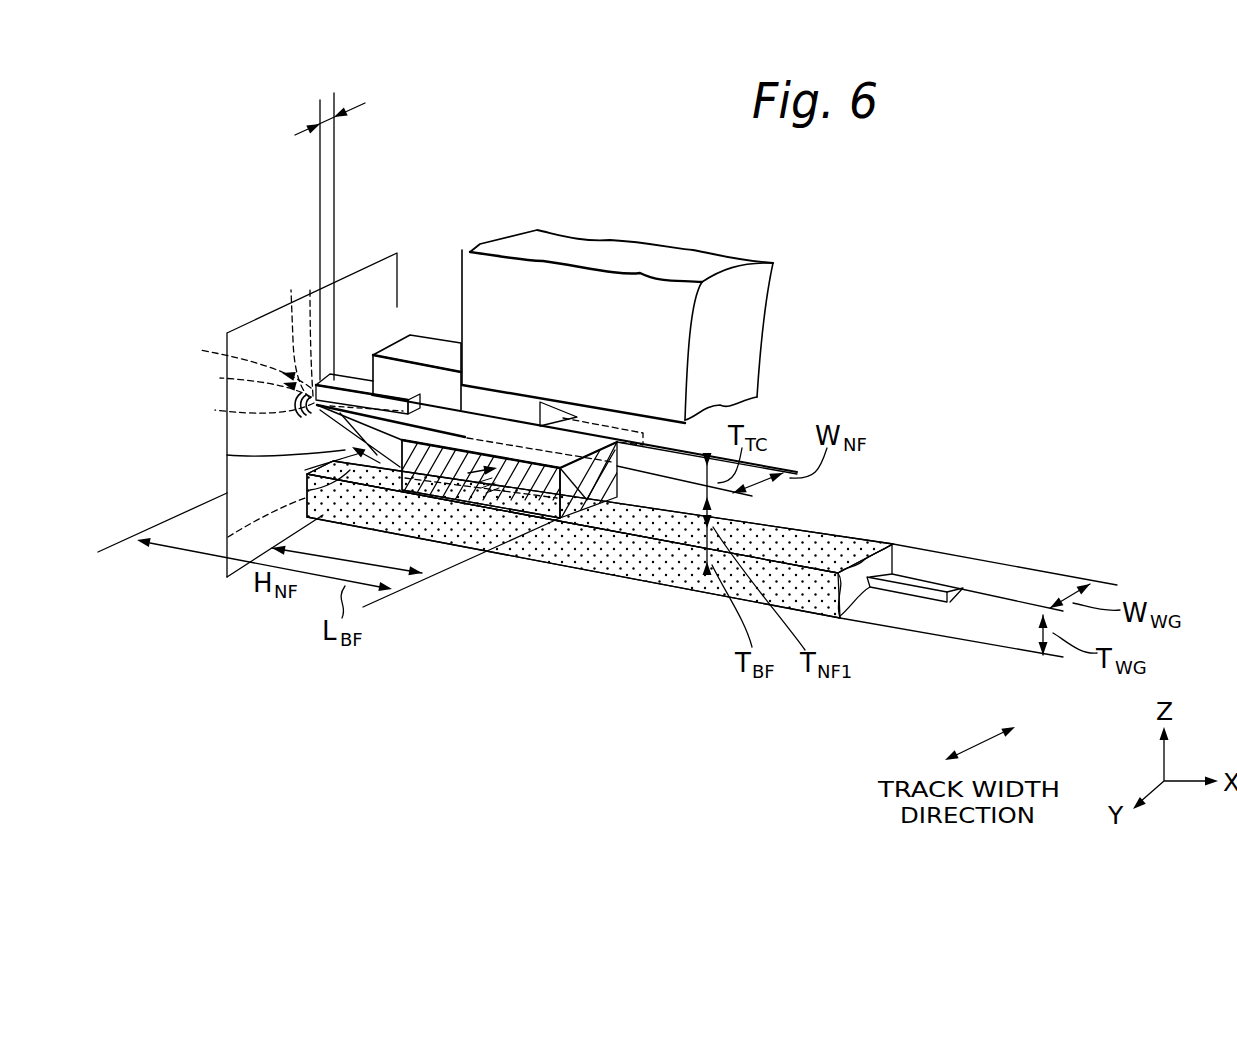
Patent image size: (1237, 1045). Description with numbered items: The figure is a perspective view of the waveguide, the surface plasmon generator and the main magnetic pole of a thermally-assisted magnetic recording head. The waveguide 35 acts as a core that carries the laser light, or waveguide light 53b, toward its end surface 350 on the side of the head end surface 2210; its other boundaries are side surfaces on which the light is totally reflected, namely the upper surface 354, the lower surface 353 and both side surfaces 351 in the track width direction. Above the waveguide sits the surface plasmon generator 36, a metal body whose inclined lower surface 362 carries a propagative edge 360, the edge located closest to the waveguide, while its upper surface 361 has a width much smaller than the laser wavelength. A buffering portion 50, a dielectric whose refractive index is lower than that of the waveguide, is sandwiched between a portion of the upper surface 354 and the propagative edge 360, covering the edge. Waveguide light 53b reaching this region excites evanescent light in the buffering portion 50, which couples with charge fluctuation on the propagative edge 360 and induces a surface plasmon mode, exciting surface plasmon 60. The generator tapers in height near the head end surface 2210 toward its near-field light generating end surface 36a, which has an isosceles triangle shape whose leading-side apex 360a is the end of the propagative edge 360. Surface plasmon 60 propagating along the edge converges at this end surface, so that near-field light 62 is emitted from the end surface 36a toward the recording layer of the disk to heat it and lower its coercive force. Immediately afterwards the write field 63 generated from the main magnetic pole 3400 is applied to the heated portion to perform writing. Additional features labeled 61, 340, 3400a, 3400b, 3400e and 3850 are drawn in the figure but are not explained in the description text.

The waveguide 35 is at (890, 519).
The surface plasmon generator 36 is at (435, 393).
The near-field light generating end surface 36a is at (311, 388).
The buffering portion 50 is at (535, 520).
The laser light (waveguide light) 53b is at (943, 587).
The surface plasmon 60 is at (478, 480).
The light receiving surface 61 is at (320, 483).
The near-field light 62 is at (312, 400).
The write field 63 is at (303, 340).
The main pole body 340 is at (507, 287).
The end surface 350 is at (203, 552).
The side surfaces 351 is at (655, 560).
The lower surface 353 is at (420, 532).
The side surface (upper surface) 354 is at (817, 543).
The propagative edge 360 is at (345, 440).
The apex 360a is at (300, 413).
The upper surface 361 is at (510, 428).
The lower surface 362 is at (530, 480).
The head end surface 2210 is at (240, 358).
The main magnetic pole 3400 is at (518, 80).
The first end portion of main pole 3400a is at (357, 385).
The second end portion of main pole 3400b is at (430, 347).
The main pole end 3400e is at (290, 347).
The shield / field line 3850 is at (313, 452).